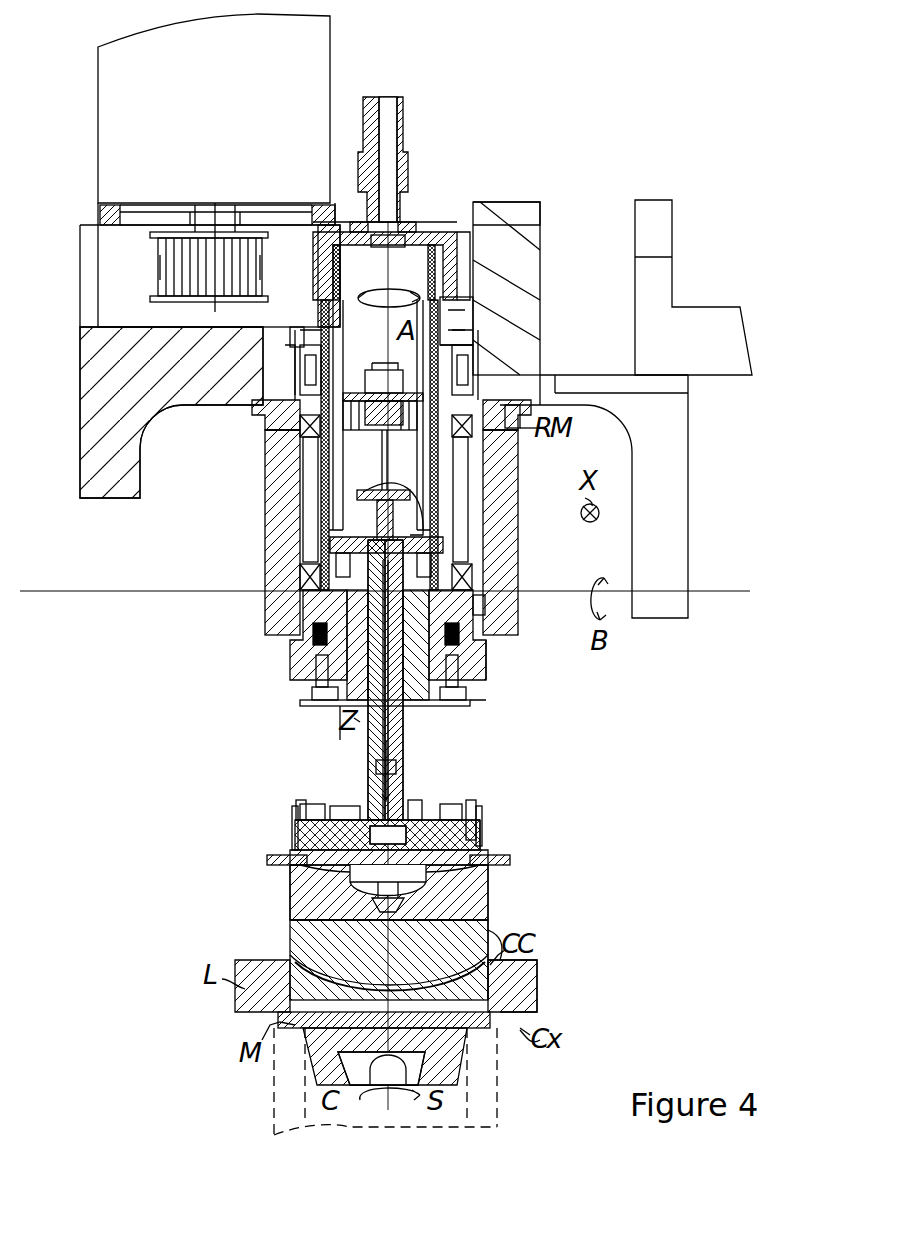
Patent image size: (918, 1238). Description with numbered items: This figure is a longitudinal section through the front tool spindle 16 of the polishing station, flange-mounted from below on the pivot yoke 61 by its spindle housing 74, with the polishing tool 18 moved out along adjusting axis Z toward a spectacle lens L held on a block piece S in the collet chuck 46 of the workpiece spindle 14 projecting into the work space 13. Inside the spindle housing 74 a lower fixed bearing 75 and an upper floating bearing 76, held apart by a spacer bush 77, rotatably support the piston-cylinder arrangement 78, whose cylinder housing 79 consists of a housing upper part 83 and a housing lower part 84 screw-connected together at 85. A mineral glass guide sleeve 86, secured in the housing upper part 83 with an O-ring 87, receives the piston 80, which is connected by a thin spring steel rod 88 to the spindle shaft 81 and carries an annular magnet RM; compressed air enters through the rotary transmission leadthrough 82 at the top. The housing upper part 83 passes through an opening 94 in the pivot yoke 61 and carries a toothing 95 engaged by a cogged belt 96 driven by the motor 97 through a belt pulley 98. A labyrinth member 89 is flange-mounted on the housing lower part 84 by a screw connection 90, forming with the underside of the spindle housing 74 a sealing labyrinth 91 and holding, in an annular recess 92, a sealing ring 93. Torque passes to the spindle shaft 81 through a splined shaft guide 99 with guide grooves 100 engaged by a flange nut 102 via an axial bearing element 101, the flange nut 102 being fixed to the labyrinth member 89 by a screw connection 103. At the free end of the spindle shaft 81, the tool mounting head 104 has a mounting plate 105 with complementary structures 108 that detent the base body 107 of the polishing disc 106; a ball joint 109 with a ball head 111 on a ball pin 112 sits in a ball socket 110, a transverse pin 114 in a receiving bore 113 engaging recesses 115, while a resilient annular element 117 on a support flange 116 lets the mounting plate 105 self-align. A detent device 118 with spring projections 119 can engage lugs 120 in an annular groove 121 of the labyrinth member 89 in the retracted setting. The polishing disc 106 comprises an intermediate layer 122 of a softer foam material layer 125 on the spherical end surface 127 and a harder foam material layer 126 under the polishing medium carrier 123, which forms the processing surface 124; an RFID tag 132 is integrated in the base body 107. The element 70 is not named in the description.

The motor 97 is at (214, 129).
The belt pulley 98 is at (170, 268).
The cogged belt 96 is at (268, 279).
The tool spindle 16 is at (255, 548).
The spindle housing 74 is at (265, 575).
The spacer bush 77 is at (277, 481).
The floating bearing 76 is at (292, 446).
The fixed bearing 75 is at (300, 598).
The rotary transmission leadthrough 82 is at (420, 155).
The housing upper part 83 is at (440, 239).
The housing lower part 84 is at (455, 467).
The guide sleeve 86 is at (452, 498).
The screw connection 85 is at (300, 383).
The O-ring 87 is at (302, 328).
The opening 94 is at (290, 338).
The piston 80 is at (357, 378).
The rod 88 is at (388, 447).
The screw connection 90 is at (372, 502).
The toothing 95 is at (520, 233).
The piston-cylinder arrangement 78 is at (480, 304).
The cylinder housing 79 is at (483, 346).
The frame 70 is at (650, 357).
The pivot yoke 61 is at (644, 486).
The labyrinth member 89 is at (292, 674).
The sealing ring 93 is at (480, 644).
The sealing labyrinth 91 is at (292, 648).
The annular recess 92 is at (488, 608).
The splined shaft guide 99 is at (478, 662).
The flange nut 102 is at (302, 703).
The axial bearing element 101 is at (330, 700).
The annular groove 121 is at (470, 693).
The screw connection 103 is at (347, 718).
The spindle shaft 81 is at (414, 739).
The guide grooves 100 is at (384, 751).
The ball pin 112 is at (398, 782).
The work space 13 is at (528, 763).
The mounting plate 105 is at (485, 844).
The ball joint 109 is at (350, 817).
The receiving bore 113 is at (301, 816).
The detent device 118 is at (282, 815).
The transverse pin 114 is at (297, 836).
The tool mounting head 104 is at (428, 810).
The support flange 116 is at (454, 808).
The resilient annular element 117 is at (474, 817).
The lugs 120 is at (484, 813).
The spring projections 119 is at (484, 827).
The recesses 115 is at (290, 855).
The polishing tool 18 is at (262, 863).
The ball socket 110 is at (292, 891).
The complementary structures 108 is at (290, 881).
The ball head 111 is at (488, 874).
The softer foam material layer 125 is at (290, 921).
The base body 107 is at (492, 909).
The polishing disc 106 is at (490, 917).
The intermediate layer 122 is at (512, 936).
The spherical end surface 127 is at (240, 966).
The harder foam material layer 126 is at (290, 971).
The processing surface 124 is at (532, 999).
The polishing medium carrier 123 is at (280, 1021).
The collet chuck 46 is at (493, 1083).
The workpiece spindle 14 is at (260, 1108).
The RFID tag 132 is at (577, 1050).